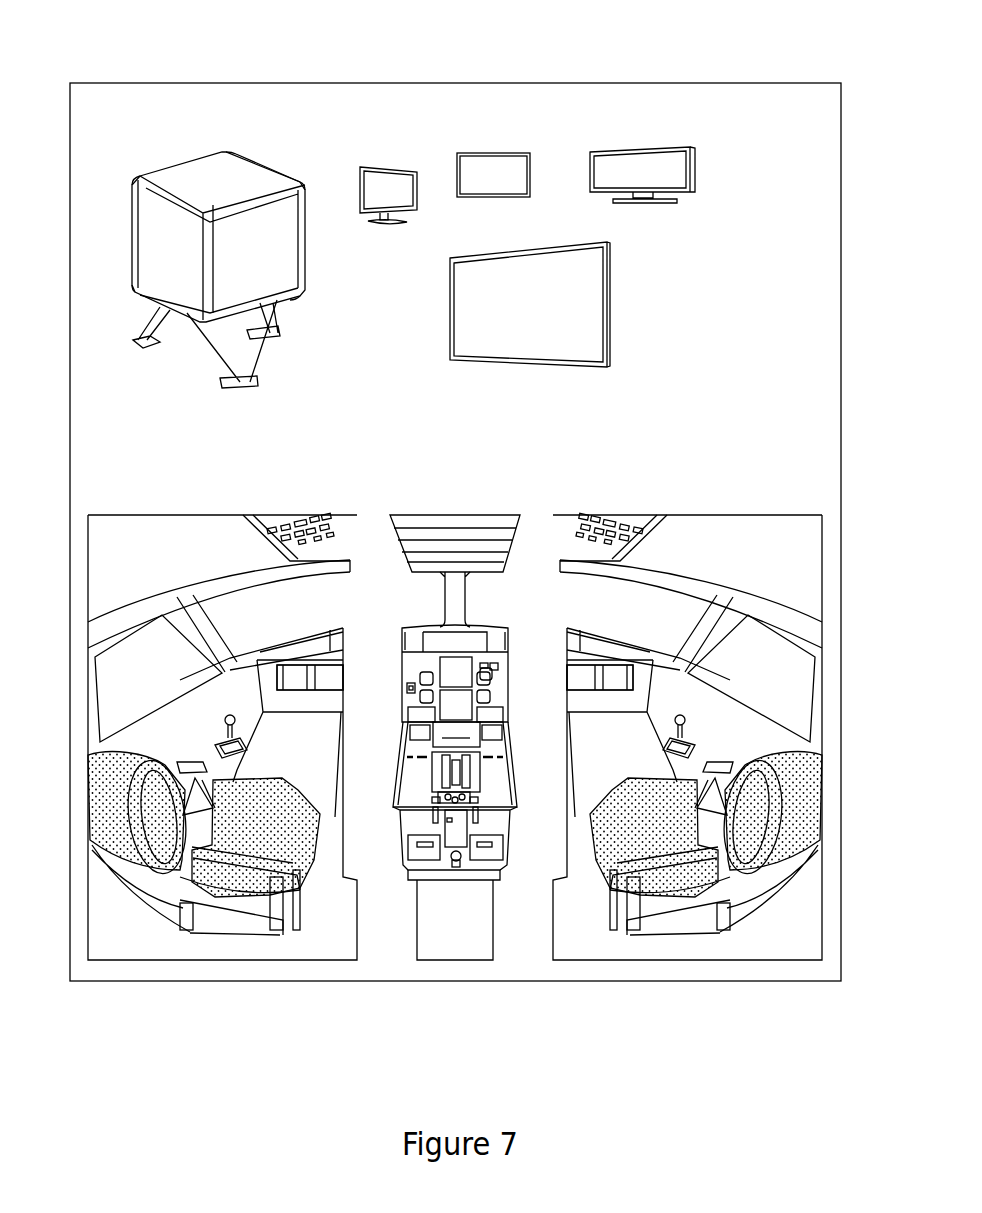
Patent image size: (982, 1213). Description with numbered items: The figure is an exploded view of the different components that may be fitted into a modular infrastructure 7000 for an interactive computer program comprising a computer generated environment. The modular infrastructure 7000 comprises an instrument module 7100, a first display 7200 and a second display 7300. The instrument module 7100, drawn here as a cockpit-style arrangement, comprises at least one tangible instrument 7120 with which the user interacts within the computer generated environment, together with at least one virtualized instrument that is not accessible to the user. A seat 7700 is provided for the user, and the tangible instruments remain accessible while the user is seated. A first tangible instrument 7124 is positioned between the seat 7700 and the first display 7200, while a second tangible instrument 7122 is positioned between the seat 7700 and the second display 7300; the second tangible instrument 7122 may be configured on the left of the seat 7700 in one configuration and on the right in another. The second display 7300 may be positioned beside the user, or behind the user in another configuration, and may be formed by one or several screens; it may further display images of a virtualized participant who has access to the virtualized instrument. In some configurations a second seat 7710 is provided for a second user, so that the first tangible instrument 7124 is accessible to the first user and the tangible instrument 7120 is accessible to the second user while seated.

The modular infrastructure 7000 is at (244, 228).
The first display 7200 is at (385, 187).
The second display 7300 is at (573, 300).
The instrument module 7100 is at (455, 806).
The tangible instrument 7120 is at (600, 852).
The second tangible instrument 7122 is at (490, 800).
The first tangible instrument 7124 is at (295, 677).
The seat 7700 is at (163, 868).
The second seat 7710 is at (706, 897).